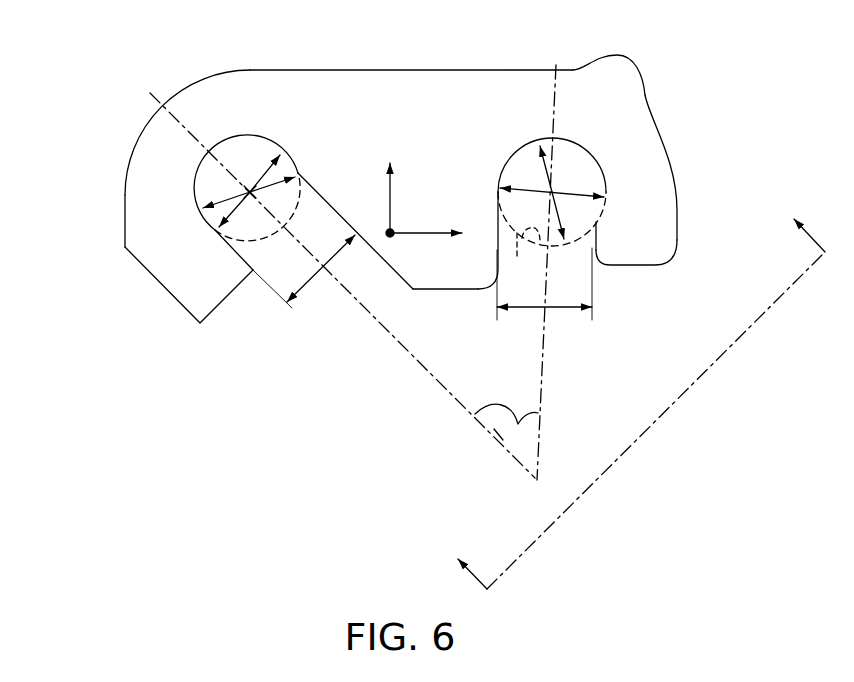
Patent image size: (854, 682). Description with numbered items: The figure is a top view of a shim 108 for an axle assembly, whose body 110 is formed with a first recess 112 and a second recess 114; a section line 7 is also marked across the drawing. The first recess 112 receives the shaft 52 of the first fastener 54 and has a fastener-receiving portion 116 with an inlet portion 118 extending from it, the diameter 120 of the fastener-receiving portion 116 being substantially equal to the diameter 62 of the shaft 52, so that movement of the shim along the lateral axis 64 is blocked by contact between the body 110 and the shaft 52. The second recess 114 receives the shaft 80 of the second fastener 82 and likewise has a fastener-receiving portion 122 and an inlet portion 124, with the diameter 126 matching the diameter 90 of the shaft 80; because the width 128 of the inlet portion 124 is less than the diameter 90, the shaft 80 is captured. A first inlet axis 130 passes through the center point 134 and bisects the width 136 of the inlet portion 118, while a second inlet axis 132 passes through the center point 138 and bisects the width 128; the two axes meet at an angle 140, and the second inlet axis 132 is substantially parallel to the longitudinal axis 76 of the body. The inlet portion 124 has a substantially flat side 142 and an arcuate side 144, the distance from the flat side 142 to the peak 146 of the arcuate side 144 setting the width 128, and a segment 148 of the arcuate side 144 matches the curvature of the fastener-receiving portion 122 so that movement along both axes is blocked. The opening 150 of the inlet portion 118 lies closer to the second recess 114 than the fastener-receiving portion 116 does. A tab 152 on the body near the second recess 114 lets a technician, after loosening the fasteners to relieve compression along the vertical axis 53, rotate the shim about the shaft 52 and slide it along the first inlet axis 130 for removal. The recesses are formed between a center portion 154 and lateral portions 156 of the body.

The shaft 52 is at (238, 243).
The vertical axis 53 is at (391, 237).
The first fastener 54 is at (232, 130).
The diameter 62 is at (266, 165).
The lateral axis 64 is at (412, 233).
The longitudinal axis 76 is at (389, 200).
The shaft 80 is at (544, 284).
The second fastener 82 is at (584, 139).
The diameter 90 is at (548, 173).
The shim 108 is at (130, 90).
The body 110 is at (428, 84).
The first recess 112 is at (205, 150).
The second recess 114 is at (590, 148).
The fastener-receiving portion 116 is at (191, 167).
The inlet portion 118 is at (275, 247).
The diameter 120 is at (224, 200).
The fastener-receiving portion 122 is at (606, 165).
The inlet portion 124 is at (569, 259).
The diameter 126 is at (605, 178).
The width 128 is at (540, 308).
The first inlet axis 130 is at (437, 383).
The second inlet axis 132 is at (543, 360).
The center point 134 is at (310, 194).
The width 136 is at (296, 252).
The center point 138 is at (548, 188).
The angle 140 is at (475, 414).
The substantially flat side 142 is at (478, 284).
The arcuate side 144 is at (596, 233).
The peak 146 is at (593, 256).
The segment 148 is at (603, 207).
The opening 150 is at (322, 271).
The tab 152 is at (632, 72).
The center portion 154 is at (445, 283).
The lateral portions 156 is at (137, 208).
The section line 7- 7 is at (632, 397).